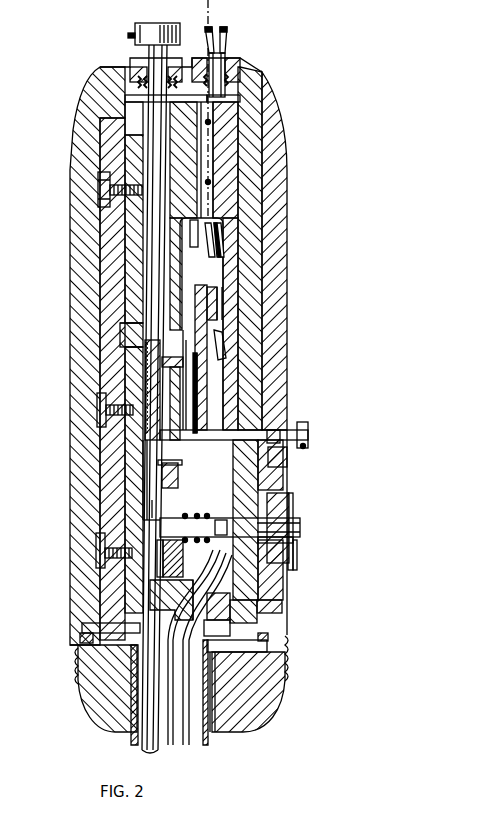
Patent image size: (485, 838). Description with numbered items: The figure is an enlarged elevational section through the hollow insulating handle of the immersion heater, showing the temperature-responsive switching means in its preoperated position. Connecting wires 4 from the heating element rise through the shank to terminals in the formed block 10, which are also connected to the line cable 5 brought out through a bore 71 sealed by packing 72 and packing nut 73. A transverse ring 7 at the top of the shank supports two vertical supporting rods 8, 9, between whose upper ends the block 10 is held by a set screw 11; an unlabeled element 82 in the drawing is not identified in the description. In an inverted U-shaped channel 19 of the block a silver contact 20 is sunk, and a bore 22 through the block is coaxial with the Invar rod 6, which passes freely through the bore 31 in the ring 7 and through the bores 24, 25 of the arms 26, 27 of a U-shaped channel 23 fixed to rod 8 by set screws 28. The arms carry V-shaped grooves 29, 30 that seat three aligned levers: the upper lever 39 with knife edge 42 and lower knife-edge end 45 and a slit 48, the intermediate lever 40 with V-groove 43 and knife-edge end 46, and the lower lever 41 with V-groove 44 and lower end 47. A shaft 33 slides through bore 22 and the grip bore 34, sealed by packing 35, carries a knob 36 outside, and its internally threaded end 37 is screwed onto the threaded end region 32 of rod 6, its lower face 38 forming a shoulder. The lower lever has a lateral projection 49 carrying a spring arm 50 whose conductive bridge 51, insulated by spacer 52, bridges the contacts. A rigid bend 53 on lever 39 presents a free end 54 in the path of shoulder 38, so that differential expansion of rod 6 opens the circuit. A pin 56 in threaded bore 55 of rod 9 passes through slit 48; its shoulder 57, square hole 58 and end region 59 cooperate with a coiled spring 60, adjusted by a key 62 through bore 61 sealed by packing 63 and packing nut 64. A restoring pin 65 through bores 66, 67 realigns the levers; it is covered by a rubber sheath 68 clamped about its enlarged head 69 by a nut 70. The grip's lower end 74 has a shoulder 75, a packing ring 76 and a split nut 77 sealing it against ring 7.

The connecting wires 4 is at (230, 22).
The line cable 5 is at (222, 52).
The Invar rod 6 is at (135, 740).
The transverse ring 7 is at (267, 651).
The supporting rod 8 is at (112, 462).
The supporting rod 9 is at (248, 162).
The formed block 10 is at (236, 140).
The set screw 11 is at (98, 180).
The channel 19 is at (220, 230).
The silver contact 20 is at (219, 303).
The bore 22 is at (118, 213).
The U-shaped channel 23 is at (122, 430).
The bore 24 is at (140, 370).
The bore 25 is at (120, 618).
The arm 26 is at (177, 364).
The arm 27 is at (217, 628).
The set screws 28 is at (97, 402).
The V-shaped groove 29 is at (224, 352).
The V-shaped groove 30 is at (150, 658).
The bore 31 is at (80, 651).
The threaded end region 32 is at (122, 350).
The shaft 33 is at (145, 232).
The bore 34 is at (138, 96).
The packing 35 is at (132, 80).
The knob 36 is at (140, 35).
The internally threaded end 37 is at (146, 345).
The lower face 38 is at (125, 380).
The upper lever 39 is at (197, 388).
The intermediate lever 40 is at (163, 565).
The lower lever 41 is at (276, 598).
The knife edge 42 is at (197, 372).
The V-groove 43 is at (297, 566).
The V-groove 44 is at (284, 590).
The knife-edge end 45 is at (157, 546).
The knife-edge end 46 is at (198, 594).
The lower end 47 is at (258, 612).
The slit 48 is at (140, 490).
The lateral projection 49 is at (165, 602).
The spring arm 50 is at (197, 378).
The conductive bridge 51 is at (215, 290).
The insulating spacer 52 is at (223, 328).
The rigid bend 53 is at (135, 450).
The free end 54 is at (152, 428).
The threaded bore 55 is at (213, 517).
The pin 56 is at (219, 520).
The shoulder 57 is at (150, 520).
The square hole 58 is at (290, 539).
The end region 59 is at (140, 527).
The coiled spring 60 is at (199, 515).
The bore 61 is at (265, 500).
The key 62 is at (300, 528).
The packing 63 is at (296, 511).
The packing nut 64 is at (294, 496).
The restoring pin 65 is at (200, 433).
The bore 66 is at (284, 420).
The bore 67 is at (223, 433).
The rubber sheath 68 is at (308, 426).
The enlarged head 69 is at (306, 446).
The nut 70 is at (288, 461).
The bore 71 is at (236, 97).
The packing 72 is at (233, 82).
The packing nut 73 is at (229, 58).
The lower end 74 is at (278, 670).
The shoulder 75 is at (268, 637).
The packing ring 76 is at (80, 633).
The split nut 77 is at (262, 718).
The inner liner 82 is at (240, 115).